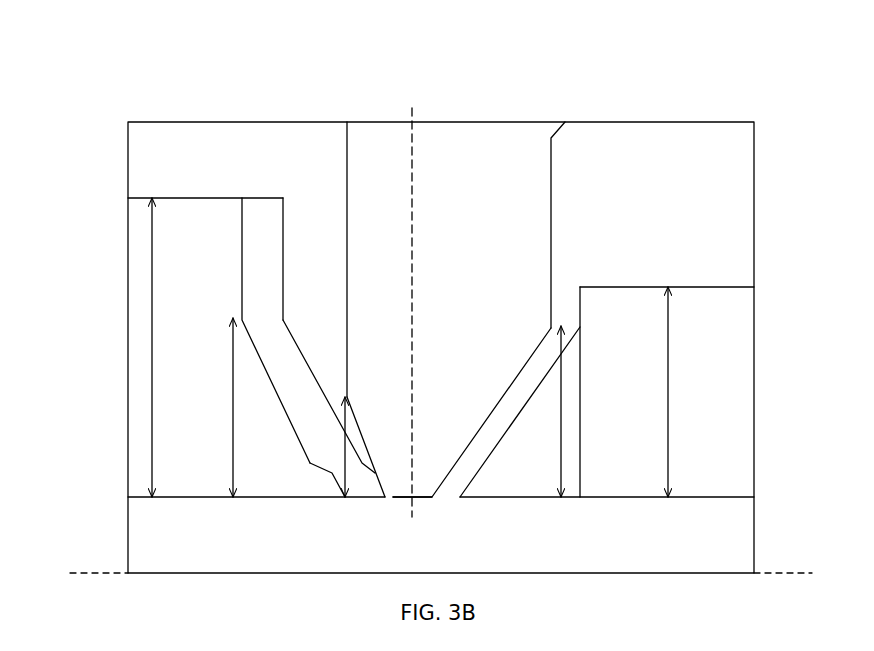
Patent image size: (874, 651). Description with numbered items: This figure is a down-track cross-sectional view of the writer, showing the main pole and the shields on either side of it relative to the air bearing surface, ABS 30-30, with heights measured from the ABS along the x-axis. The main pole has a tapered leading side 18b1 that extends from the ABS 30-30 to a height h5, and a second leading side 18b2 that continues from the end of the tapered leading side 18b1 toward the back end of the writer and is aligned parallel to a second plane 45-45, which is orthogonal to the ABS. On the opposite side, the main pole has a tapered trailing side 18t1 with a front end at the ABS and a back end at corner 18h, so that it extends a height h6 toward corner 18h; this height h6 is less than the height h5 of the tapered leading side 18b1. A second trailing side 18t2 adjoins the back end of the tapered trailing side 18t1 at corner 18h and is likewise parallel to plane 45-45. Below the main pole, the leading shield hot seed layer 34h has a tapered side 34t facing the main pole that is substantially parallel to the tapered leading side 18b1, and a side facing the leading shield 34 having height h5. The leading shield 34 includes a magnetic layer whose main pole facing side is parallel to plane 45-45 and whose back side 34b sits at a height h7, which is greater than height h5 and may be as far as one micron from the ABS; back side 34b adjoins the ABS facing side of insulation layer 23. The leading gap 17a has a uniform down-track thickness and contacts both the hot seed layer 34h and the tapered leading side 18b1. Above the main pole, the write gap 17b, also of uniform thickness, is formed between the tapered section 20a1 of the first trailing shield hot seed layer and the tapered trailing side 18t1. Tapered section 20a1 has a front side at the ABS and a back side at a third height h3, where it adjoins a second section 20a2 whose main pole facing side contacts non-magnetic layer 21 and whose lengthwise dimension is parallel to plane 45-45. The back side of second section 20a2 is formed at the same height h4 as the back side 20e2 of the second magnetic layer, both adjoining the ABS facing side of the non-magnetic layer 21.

The non-magnetic layer 21 is at (178, 133).
The insulation layer 23 is at (727, 140).
The back side of the second magnetic layer 20e2 is at (167, 197).
The second section of the first trailing shield hot seed layer 20a2 is at (283, 210).
The tapered section of the first trailing shield hot seed layer 20a1 is at (300, 358).
The write gap 17b is at (325, 387).
The leading gap 17a is at (538, 362).
The tapered trailing side 18t1 is at (373, 470).
The second trailing side 18t2 is at (343, 135).
The corner 18h is at (355, 410).
The tapered leading side 18b1 is at (450, 470).
The second leading side 18b2 is at (551, 192).
The leading shield 34 is at (757, 375).
The back side of the leading shield 34b is at (728, 282).
The tapered side of the leading shield hot seed layer 34t is at (493, 452).
The leading shield hot seed layer 34h is at (585, 411).
The third height h3 is at (216, 407).
The height h4 is at (167, 347).
The height h5 is at (544, 411).
The height h6 is at (328, 447).
The height h7 is at (685, 392).
The second plane 45 is at (410, 317).
The air bearing surface (ABS) 30 is at (440, 575).